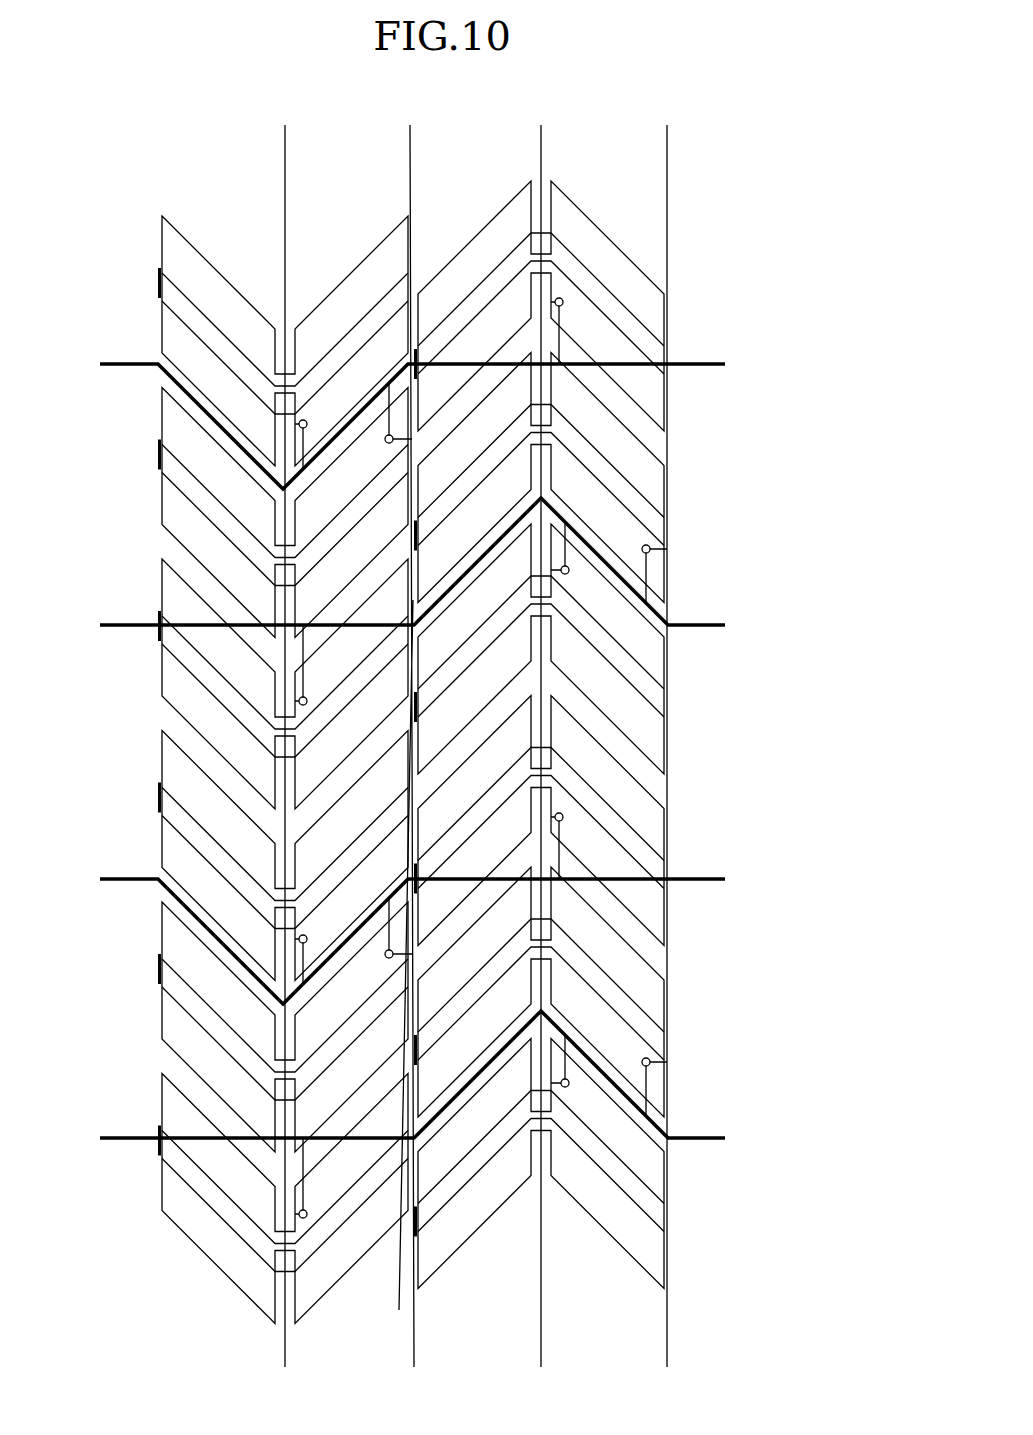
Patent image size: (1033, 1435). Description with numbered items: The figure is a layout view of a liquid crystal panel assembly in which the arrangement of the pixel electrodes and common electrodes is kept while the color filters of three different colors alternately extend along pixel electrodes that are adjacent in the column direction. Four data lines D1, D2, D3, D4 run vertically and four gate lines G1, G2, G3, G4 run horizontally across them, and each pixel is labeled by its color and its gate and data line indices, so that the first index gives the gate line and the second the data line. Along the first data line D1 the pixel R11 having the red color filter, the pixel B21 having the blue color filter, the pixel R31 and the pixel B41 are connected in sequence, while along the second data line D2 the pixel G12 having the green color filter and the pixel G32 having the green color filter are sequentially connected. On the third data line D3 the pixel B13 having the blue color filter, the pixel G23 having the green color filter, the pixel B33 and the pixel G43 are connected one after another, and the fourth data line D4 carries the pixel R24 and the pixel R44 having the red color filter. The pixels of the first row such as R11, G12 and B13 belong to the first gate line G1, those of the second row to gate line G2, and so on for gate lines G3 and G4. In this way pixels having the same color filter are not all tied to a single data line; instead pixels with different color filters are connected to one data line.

The first data line D1 is at (277, 728).
The second data line D2 is at (403, 728).
The third data line D3 is at (534, 728).
The fourth data line D4 is at (661, 728).
The first gate line G1 is at (392, 421).
The second gate line G2 is at (392, 567).
The third gate line G3 is at (392, 936).
The fourth gate line G4 is at (392, 1080).
The pixel having the red color filter R11 is at (284, 341).
The pixel having the green color filter G12 is at (284, 513).
The pixel having the blue color filter B13 is at (540, 306).
The pixel having the blue color filter B21 is at (284, 684).
The pixel having the green color filter G23 is at (540, 649).
The pixel having the red color filter R24 is at (540, 478).
The pixel having the red color filter R31 is at (284, 856).
The pixel having the green color filter G32 is at (284, 1027).
The pixel having the blue color filter B33 is at (540, 821).
The pixel having the blue color filter B41 is at (284, 1199).
The pixel having the green color filter G43 is at (540, 1164).
The pixel having the red color filter R44 is at (540, 992).